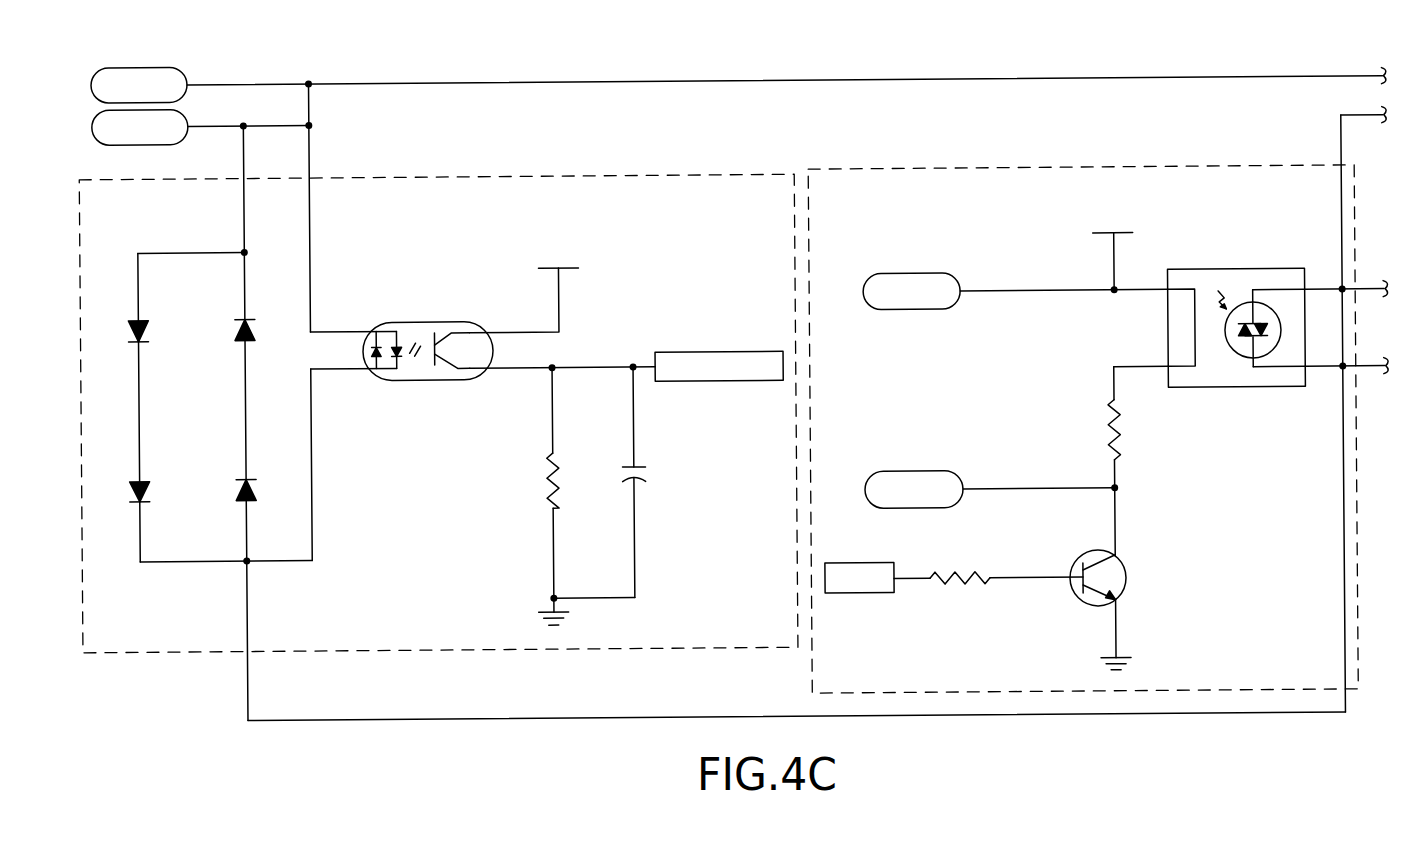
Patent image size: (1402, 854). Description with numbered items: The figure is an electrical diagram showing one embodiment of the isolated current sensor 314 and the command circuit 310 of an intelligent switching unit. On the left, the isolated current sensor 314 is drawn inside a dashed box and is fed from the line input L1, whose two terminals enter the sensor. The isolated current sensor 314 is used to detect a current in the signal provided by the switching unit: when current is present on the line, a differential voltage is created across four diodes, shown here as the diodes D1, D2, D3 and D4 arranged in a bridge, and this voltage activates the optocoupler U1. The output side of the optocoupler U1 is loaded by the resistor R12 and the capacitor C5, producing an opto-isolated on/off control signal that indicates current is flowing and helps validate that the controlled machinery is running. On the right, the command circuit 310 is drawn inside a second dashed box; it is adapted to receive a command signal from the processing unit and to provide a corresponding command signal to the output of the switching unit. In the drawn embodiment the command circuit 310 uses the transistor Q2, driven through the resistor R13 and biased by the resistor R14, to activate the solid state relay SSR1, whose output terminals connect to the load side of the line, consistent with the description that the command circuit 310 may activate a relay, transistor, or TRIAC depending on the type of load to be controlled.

The isolated current sensor 314 is at (704, 174).
The command circuit 310 is at (909, 169).
The line input connector P1 L1 is at (157, 89).
The rectifier diode D1 is at (245, 319).
The rectifier diode D2 is at (135, 318).
The rectifier diode D3 is at (160, 485).
The rectifier diode D4 is at (229, 484).
The optocoupler H11AA814S U1 is at (432, 350).
The resistor 8K2 R12 is at (552, 456).
The capacitor 22uF C5 is at (641, 443).
The solid state relay S108T01 SSR1 is at (1239, 331).
The resistor 3K R14 is at (1116, 429).
The resistor 2K R13 is at (960, 580).
The transistor FZT493TA Q2 is at (1055, 590).